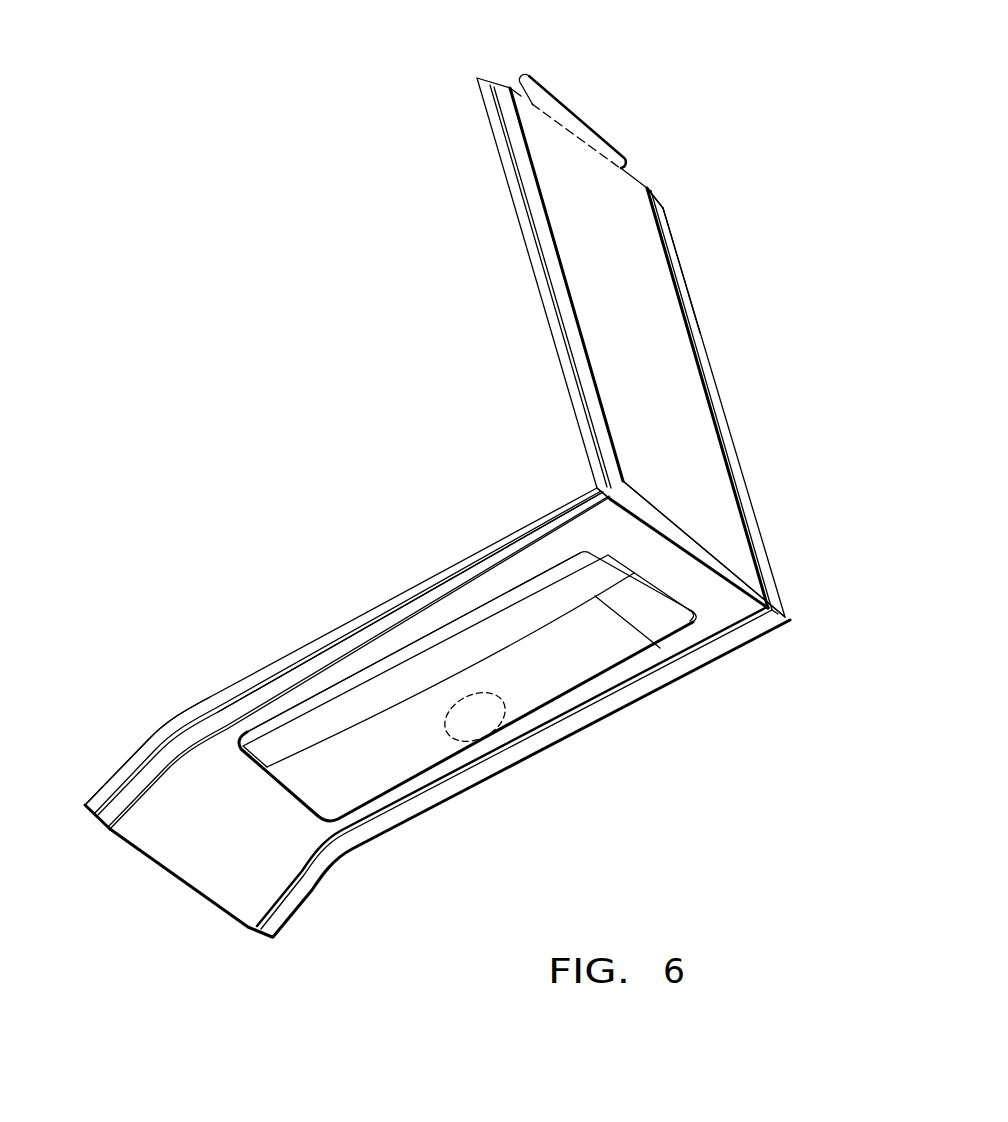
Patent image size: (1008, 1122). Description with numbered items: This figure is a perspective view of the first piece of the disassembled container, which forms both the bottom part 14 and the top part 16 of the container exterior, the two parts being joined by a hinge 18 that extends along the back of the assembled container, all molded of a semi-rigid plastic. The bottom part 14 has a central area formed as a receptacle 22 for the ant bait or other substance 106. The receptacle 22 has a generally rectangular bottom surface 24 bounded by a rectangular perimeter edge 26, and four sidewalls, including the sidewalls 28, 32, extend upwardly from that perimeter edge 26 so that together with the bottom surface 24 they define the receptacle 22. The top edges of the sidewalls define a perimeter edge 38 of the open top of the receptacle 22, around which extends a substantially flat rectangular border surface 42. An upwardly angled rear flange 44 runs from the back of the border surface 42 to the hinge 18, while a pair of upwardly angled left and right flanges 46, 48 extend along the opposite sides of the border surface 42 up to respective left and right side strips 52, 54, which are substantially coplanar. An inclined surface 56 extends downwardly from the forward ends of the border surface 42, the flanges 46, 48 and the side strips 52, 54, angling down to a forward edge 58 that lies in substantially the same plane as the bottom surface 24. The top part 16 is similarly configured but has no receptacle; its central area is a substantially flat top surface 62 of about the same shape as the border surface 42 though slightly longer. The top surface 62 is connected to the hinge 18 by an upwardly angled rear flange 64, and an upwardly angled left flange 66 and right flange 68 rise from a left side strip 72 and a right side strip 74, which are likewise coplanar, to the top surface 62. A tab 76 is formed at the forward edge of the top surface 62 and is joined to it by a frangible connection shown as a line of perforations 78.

The bottom part 14 is at (482, 808).
The top part 16 is at (742, 403).
The hinge 18 is at (786, 617).
The receptacle 22 is at (402, 655).
The bottom surface 24 is at (348, 690).
The perimeter edge 26 is at (298, 757).
The sidewall 28 is at (480, 637).
The sidewall 32 is at (628, 589).
The perimeter edge 38 is at (370, 743).
The border surface 42 is at (235, 730).
The rear flange 44 is at (733, 604).
The left flange 46 is at (438, 598).
The right flange 48 is at (566, 713).
The left side strip 52 is at (520, 536).
The right side strip 54 is at (675, 667).
The inclined surface 56 is at (228, 888).
The forward edge 58 is at (137, 847).
The top surface 62 is at (631, 272).
The rear flange 64 is at (722, 562).
The left flange 66 is at (546, 238).
The right flange 68 is at (648, 188).
The left side strip 72 is at (500, 145).
The right side strip 74 is at (668, 230).
The tab 76 is at (594, 139).
The line of perforations 78 is at (555, 122).
The ant bait 106 is at (433, 743).